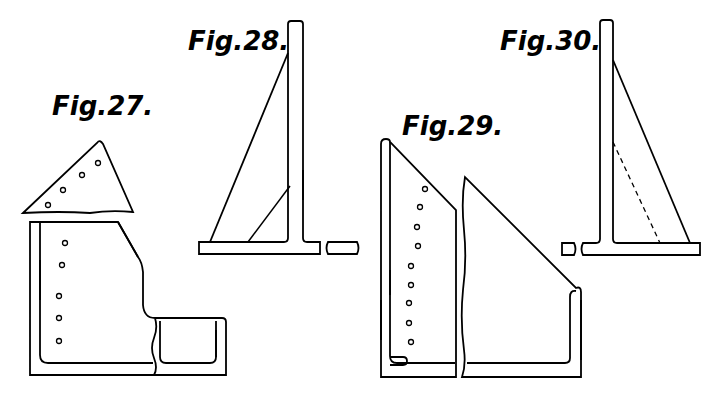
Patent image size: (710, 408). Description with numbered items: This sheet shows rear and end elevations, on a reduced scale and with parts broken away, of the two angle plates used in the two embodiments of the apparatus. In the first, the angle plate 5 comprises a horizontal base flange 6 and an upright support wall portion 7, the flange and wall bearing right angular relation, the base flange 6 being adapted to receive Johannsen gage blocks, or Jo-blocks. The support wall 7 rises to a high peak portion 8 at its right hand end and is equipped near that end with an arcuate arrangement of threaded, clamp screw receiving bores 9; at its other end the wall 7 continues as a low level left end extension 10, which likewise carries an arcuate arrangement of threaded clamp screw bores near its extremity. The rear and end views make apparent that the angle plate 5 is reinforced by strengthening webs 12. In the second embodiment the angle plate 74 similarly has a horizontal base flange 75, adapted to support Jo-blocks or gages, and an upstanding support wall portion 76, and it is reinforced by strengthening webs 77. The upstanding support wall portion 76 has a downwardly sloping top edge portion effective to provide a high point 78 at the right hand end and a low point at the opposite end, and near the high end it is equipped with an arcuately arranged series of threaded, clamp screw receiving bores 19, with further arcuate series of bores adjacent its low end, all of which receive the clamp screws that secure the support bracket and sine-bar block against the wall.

In FIG. 27, the angle plate 5 is at (146, 290).
In FIG. 28, the angle plate 5 is at (304, 122).
In FIG. 27, the horizontal base flange 6 is at (105, 357).
In FIG. 28, the horizontal base flange 6 is at (334, 242).
In FIG. 27, the upright support wall portion 7 is at (118, 265).
In FIG. 28, the upright support wall portion 7 is at (303, 182).
In FIG. 27, the high peak portion 8 is at (57, 180).
In FIG. 28, the high peak portion 8 is at (297, 60).
In FIG. 27, the threaded clamp screw receiving bores 9 is at (96, 160).
In FIG. 27, the low level left end extension 10 is at (197, 328).
In FIG. 27, the strengthening webs 12 is at (39, 284).
In FIG. 28, the strengthening webs 12 is at (274, 213).
In FIG. 29, the holes 19 is at (413, 264).
In FIG. 29, the angle plate 74 is at (380, 206).
In FIG. 30, the angle plate 74 is at (599, 145).
In FIG. 29, the horizontal base flange 75 is at (392, 358).
In FIG. 30, the horizontal base flange 75 is at (571, 242).
In FIG. 29, the upstanding support wall portion 76 is at (400, 278).
In FIG. 30, the upstanding support wall portion 76 is at (600, 93).
In FIG. 29, the strengthening webs 77 is at (383, 321).
In FIG. 29, the high point 78 is at (440, 188).